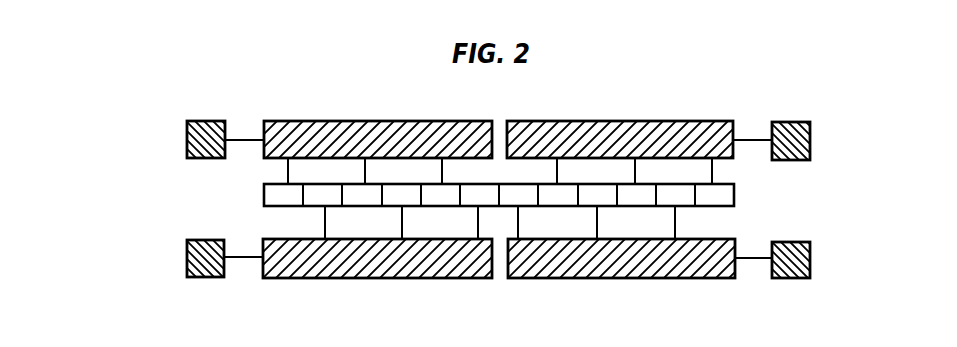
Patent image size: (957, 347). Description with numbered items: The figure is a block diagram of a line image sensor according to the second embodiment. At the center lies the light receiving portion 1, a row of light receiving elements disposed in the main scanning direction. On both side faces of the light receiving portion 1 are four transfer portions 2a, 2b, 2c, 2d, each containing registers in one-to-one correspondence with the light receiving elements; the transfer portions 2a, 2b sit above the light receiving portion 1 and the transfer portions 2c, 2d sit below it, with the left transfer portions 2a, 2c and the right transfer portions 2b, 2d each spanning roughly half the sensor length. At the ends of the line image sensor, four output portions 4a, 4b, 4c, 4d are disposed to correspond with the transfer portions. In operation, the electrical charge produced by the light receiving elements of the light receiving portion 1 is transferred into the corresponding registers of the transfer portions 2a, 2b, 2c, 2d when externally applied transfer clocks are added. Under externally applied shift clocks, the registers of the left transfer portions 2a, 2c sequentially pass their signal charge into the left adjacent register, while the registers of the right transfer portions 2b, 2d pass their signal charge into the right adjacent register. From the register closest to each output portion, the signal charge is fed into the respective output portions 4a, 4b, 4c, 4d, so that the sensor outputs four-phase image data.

The light receiving portion 1 is at (264, 196).
The transfer portion 2a is at (295, 121).
The transfer portion 2b is at (533, 121).
The transfer portion 2c is at (295, 278).
The transfer portion 2d is at (530, 278).
The output portion 4a is at (187, 140).
The output portion 4b is at (810, 140).
The output portion 4c is at (187, 248).
The output portion 4d is at (810, 258).